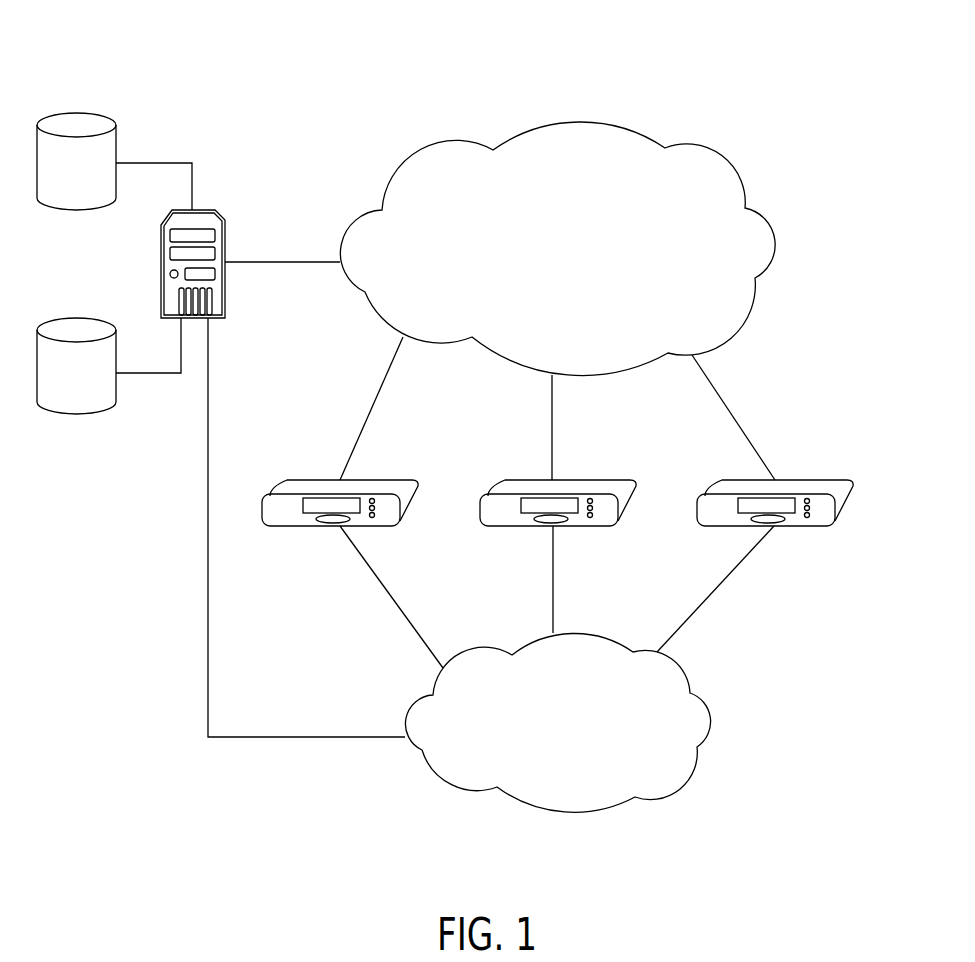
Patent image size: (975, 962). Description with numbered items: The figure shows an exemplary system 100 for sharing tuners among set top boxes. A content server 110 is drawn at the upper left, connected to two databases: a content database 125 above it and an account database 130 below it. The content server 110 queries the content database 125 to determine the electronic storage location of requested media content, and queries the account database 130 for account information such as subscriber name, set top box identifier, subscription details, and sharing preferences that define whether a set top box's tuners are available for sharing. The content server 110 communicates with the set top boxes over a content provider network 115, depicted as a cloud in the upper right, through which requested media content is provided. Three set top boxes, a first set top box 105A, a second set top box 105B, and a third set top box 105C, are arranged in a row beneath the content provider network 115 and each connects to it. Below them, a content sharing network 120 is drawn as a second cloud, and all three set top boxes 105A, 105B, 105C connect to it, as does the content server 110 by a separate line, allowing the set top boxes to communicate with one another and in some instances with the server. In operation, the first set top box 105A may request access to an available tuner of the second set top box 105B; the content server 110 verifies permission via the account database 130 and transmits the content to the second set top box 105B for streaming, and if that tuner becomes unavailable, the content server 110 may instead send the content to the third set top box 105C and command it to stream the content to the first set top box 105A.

The system 100 is at (779, 90).
The first set top box 105A is at (310, 478).
The second set top box 105B is at (512, 478).
The third set top box 105C is at (810, 478).
The content server 110 is at (200, 209).
The content provider network 115 is at (557, 248).
The content sharing network 120 is at (557, 722).
The content database 125 is at (75, 113).
The account database 130 is at (75, 417).